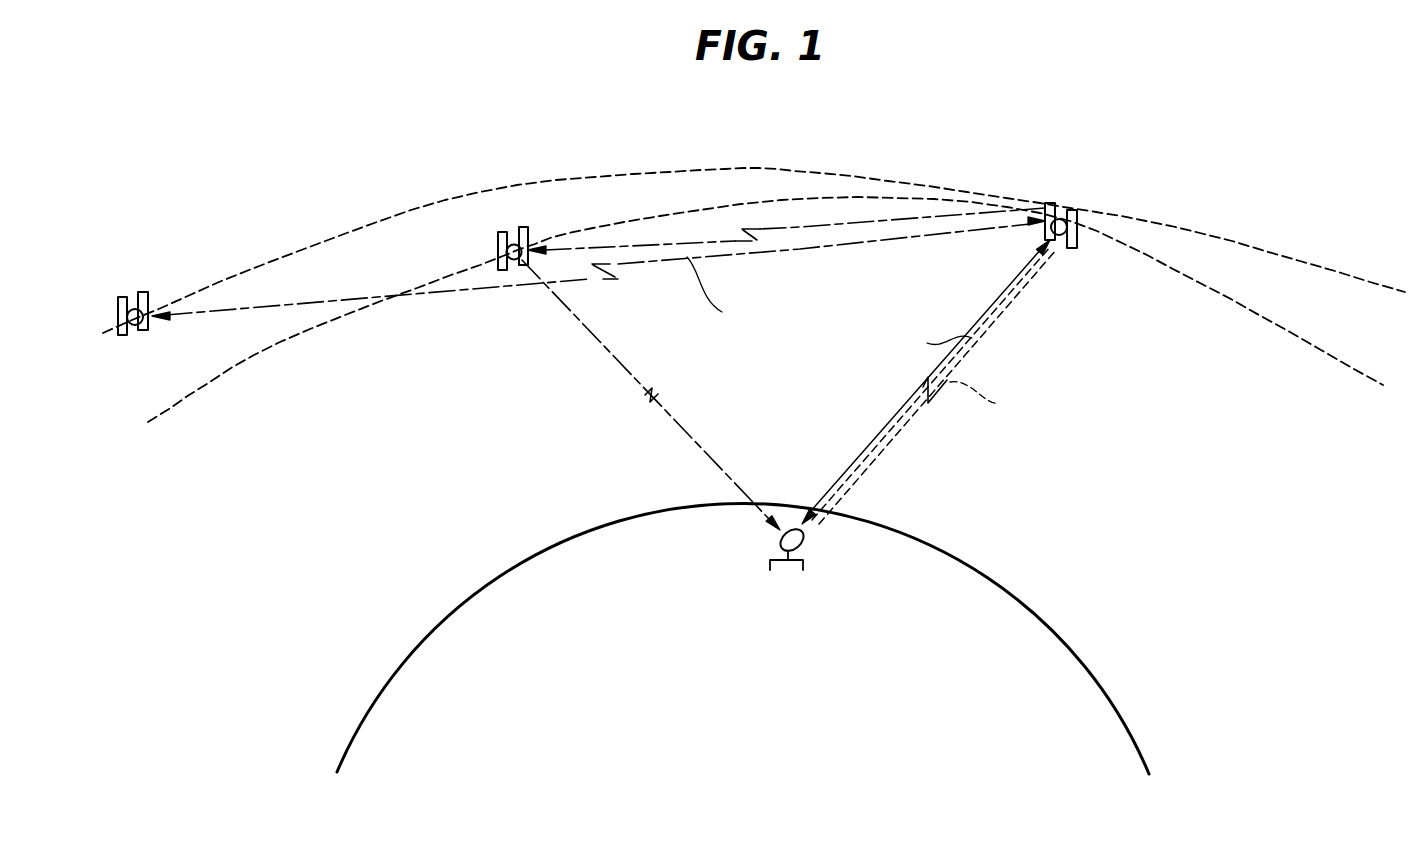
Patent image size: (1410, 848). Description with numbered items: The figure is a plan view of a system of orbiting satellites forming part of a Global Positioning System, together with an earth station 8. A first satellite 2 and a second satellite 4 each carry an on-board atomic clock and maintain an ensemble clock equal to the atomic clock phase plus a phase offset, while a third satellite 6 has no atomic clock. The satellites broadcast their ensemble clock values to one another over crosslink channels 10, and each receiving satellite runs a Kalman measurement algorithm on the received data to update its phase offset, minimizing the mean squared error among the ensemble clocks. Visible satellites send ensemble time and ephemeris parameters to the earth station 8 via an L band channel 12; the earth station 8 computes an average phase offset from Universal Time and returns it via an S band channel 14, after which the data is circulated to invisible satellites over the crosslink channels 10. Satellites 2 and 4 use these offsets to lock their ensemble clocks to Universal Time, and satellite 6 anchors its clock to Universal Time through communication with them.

The first satellite 2 is at (1080, 248).
The second satellite 4 is at (498, 248).
The third satellite 6 is at (117, 335).
The earth station 8 is at (780, 548).
The crosslink channels 10 is at (620, 243).
The L band channel 12 is at (703, 447).
The S band channel 14 is at (880, 447).